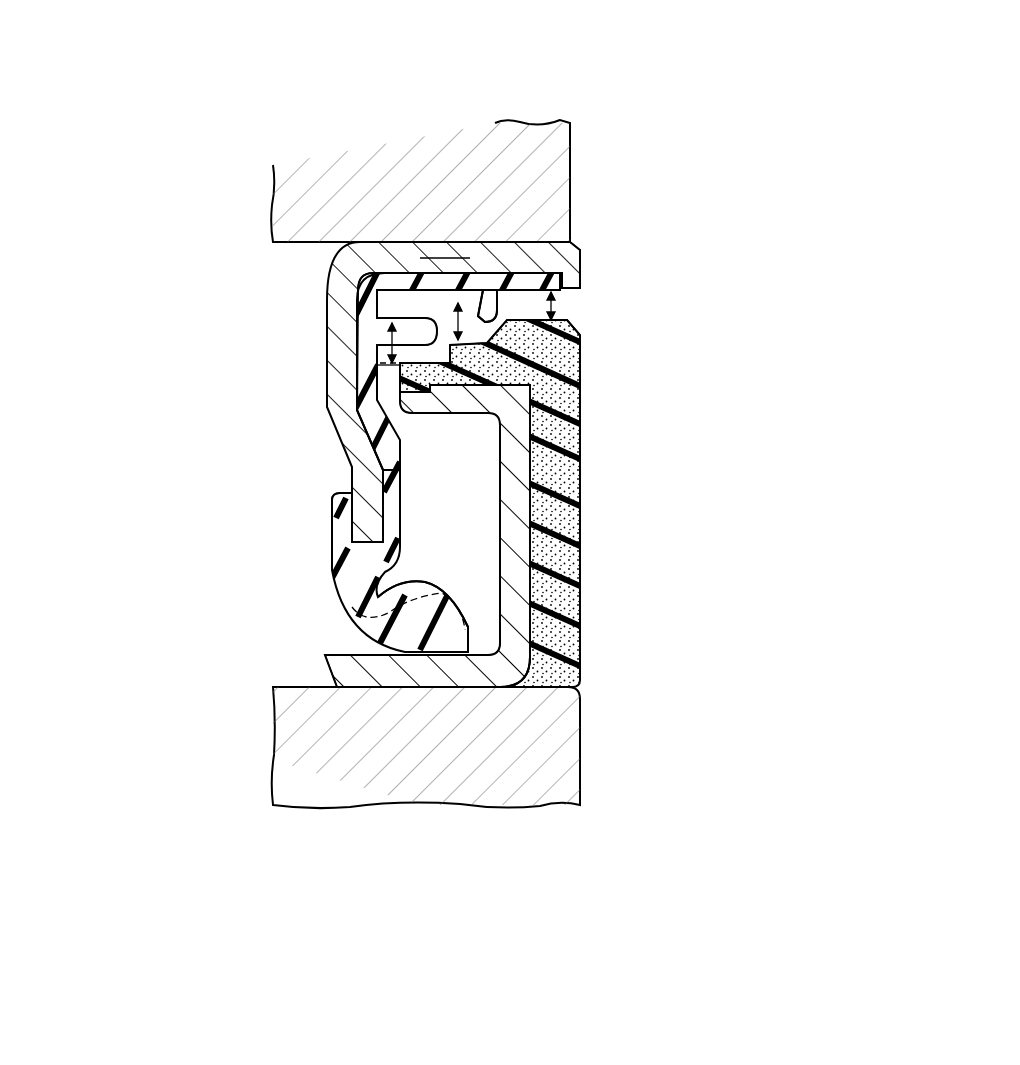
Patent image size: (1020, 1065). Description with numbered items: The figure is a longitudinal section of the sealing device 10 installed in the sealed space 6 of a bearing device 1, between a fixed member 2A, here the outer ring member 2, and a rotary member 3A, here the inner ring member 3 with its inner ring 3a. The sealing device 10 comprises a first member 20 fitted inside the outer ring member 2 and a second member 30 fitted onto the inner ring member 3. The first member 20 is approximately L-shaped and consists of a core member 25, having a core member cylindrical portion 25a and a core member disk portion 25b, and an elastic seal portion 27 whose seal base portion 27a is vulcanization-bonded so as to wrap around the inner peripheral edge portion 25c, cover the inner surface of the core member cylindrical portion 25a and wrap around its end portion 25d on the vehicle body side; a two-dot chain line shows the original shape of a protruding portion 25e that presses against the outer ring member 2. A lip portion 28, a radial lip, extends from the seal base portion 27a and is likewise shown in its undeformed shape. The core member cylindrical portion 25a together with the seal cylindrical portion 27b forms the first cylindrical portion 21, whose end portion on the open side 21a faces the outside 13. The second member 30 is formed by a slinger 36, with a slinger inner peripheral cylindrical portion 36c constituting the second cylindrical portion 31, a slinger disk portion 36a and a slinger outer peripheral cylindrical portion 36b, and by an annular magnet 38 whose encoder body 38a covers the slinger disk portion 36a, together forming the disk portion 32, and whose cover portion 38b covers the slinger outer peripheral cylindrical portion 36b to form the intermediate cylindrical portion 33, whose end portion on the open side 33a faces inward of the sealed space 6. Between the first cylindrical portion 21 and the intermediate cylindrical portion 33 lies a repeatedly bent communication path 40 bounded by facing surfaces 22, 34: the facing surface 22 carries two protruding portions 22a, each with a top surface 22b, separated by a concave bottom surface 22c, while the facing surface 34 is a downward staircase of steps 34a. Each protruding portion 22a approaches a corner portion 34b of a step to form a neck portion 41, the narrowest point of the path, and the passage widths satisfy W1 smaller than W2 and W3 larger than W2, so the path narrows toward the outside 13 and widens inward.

The bearing device 1 is at (592, 819).
The outer ring member 2 is at (575, 135).
The fixed member 2A is at (457, 167).
The inner ring member 3 is at (497, 747).
The rotary member 3A is at (497, 747).
The inner ring 3a is at (555, 738).
The sealed space 6 is at (126, 519).
The sealing device 10 is at (434, 608).
The outside 13 is at (778, 463).
The first member 20 is at (268, 47).
The first cylindrical portion 21 is at (423, 258).
The end portion on the open side 21a is at (572, 268).
The facing surface 22 is at (508, 300).
The protruding portion 22a is at (398, 318).
The top surface 22b is at (400, 357).
The concave bottom surface 22c is at (365, 303).
The core member 25 is at (358, 262).
The core member cylindrical portion 25a is at (415, 250).
The core member disk portion 25b is at (337, 402).
The inner peripheral edge portion 25c is at (360, 527).
The end portion on the vehicle body side 25d is at (575, 278).
The protruding portion 25e is at (500, 238).
The seal portion 27 is at (397, 290).
The seal base portion 27a is at (362, 478).
The seal cylindrical portion 27b is at (405, 287).
The lip portion 28 is at (365, 615).
The second member 30 is at (656, 462).
The second cylindrical portion 31 is at (418, 764).
The disk portion 32 is at (672, 583).
The intermediate cylindrical portion 33 is at (668, 345).
The end portion on the open side 33a is at (388, 438).
The facing surface 34 is at (545, 338).
The step 34a is at (560, 312).
The corner portion 34b is at (427, 414).
The slinger 36 is at (515, 530).
The slinger disk portion 36a is at (515, 597).
The slinger outer peripheral cylindrical portion 36b is at (480, 396).
The slinger inner peripheral cylindrical portion 36c is at (400, 682).
The annular magnet 38 is at (545, 455).
The encoder body 38a is at (560, 580).
The cover portion 38b is at (545, 345).
The communication path 40 is at (400, 370).
The neck portion 41 is at (455, 262).
The width dimension W1 is at (556, 298).
The width dimension W2 is at (469, 414).
The width dimension W3 is at (400, 330).